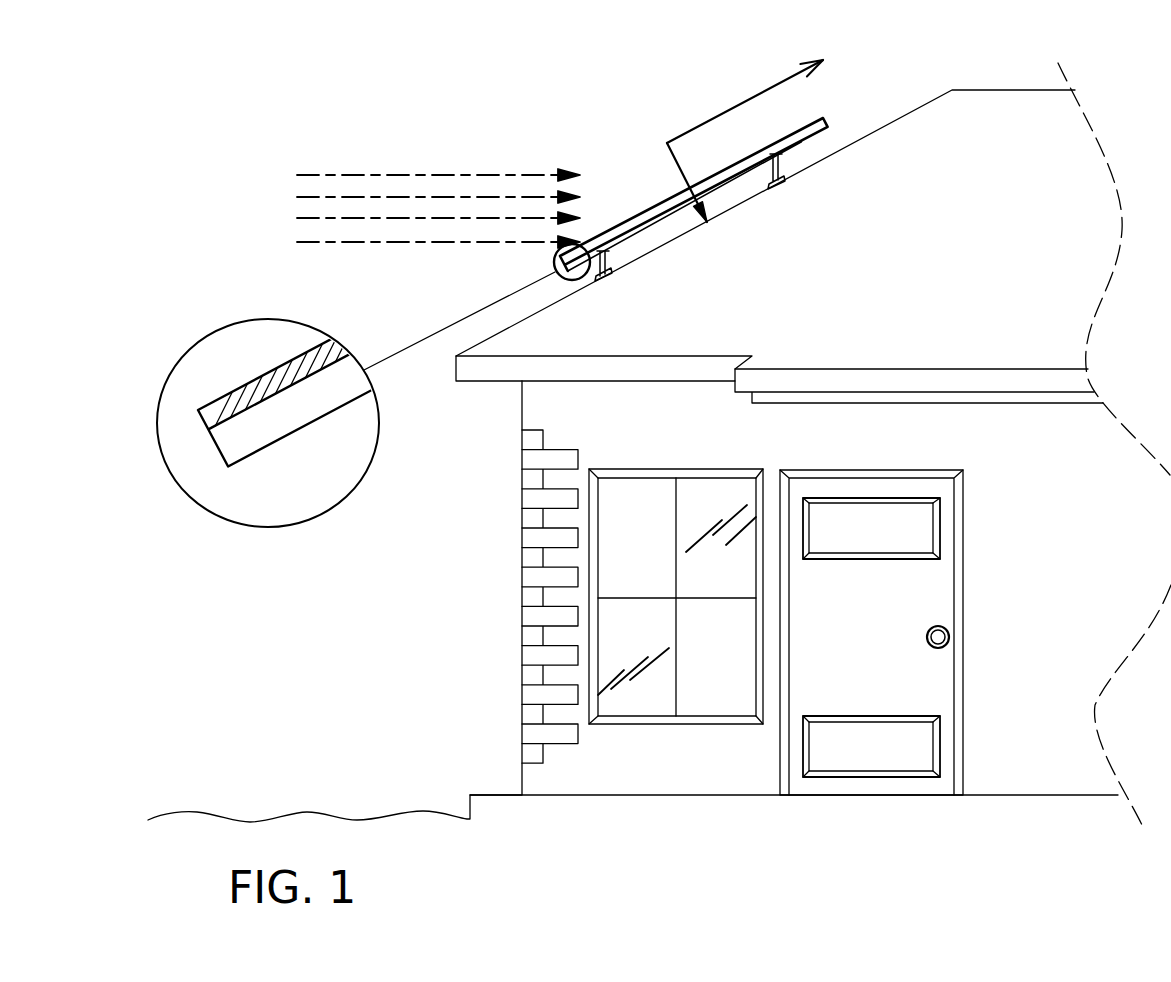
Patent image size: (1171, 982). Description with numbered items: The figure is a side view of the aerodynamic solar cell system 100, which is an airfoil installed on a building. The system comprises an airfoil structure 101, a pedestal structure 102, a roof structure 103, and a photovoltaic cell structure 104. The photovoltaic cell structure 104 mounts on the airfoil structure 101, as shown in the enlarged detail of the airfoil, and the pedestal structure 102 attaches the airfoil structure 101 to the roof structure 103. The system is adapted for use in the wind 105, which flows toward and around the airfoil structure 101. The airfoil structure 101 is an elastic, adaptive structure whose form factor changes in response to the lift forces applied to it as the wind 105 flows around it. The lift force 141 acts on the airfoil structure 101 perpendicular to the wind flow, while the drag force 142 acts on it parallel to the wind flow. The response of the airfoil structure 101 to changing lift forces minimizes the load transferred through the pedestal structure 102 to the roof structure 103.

The aerodynamic solar cell system 100 is at (246, 124).
The airfoil structure 101 is at (637, 218).
The pedestal structure 102 is at (766, 181).
The roof structure 103 is at (870, 138).
The photovoltaic cell structure 104 is at (240, 385).
The wind 105 is at (418, 218).
The lift force 141 is at (684, 177).
The drag force 142 is at (728, 110).